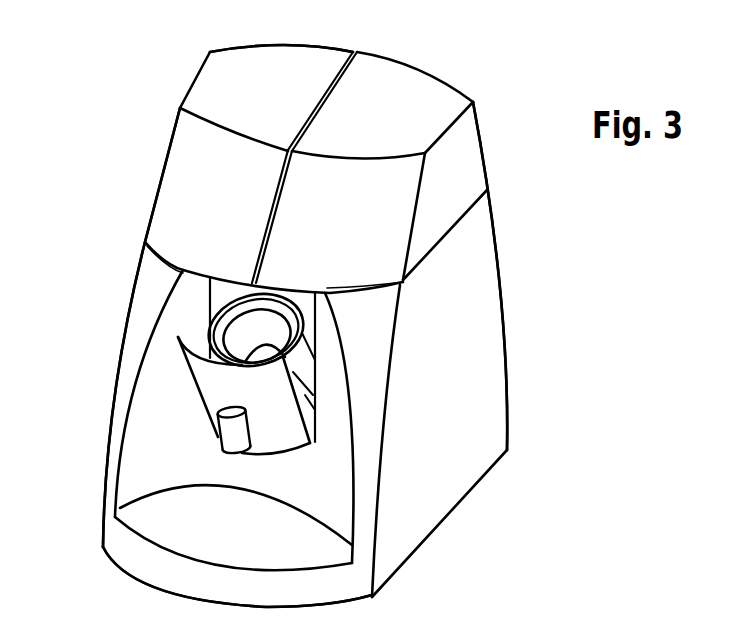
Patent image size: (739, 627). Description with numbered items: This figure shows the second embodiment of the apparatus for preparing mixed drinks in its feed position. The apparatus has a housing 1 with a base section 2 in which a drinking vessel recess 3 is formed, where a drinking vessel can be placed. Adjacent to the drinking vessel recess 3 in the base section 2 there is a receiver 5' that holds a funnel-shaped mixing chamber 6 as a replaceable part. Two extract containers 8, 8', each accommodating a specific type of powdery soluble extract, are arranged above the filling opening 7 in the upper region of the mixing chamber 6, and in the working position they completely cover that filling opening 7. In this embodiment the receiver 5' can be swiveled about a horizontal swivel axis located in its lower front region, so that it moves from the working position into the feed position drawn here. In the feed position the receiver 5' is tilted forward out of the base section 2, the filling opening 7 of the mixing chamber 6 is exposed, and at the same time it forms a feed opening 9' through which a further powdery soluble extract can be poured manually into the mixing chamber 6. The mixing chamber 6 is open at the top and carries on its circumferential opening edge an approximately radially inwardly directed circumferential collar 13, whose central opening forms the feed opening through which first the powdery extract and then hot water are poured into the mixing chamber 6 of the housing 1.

The housing 1 is at (545, 317).
The base section 2 is at (440, 460).
The drinking vessel recess 3 is at (150, 393).
The receiver 5' is at (317, 454).
The mixing chamber 6 is at (235, 342).
The filling opening 7 is at (228, 312).
The feed opening 9' is at (181, 312).
The extract container 8 is at (240, 98).
The extract container 8' is at (406, 93).
The circumferential collar 13 is at (220, 422).